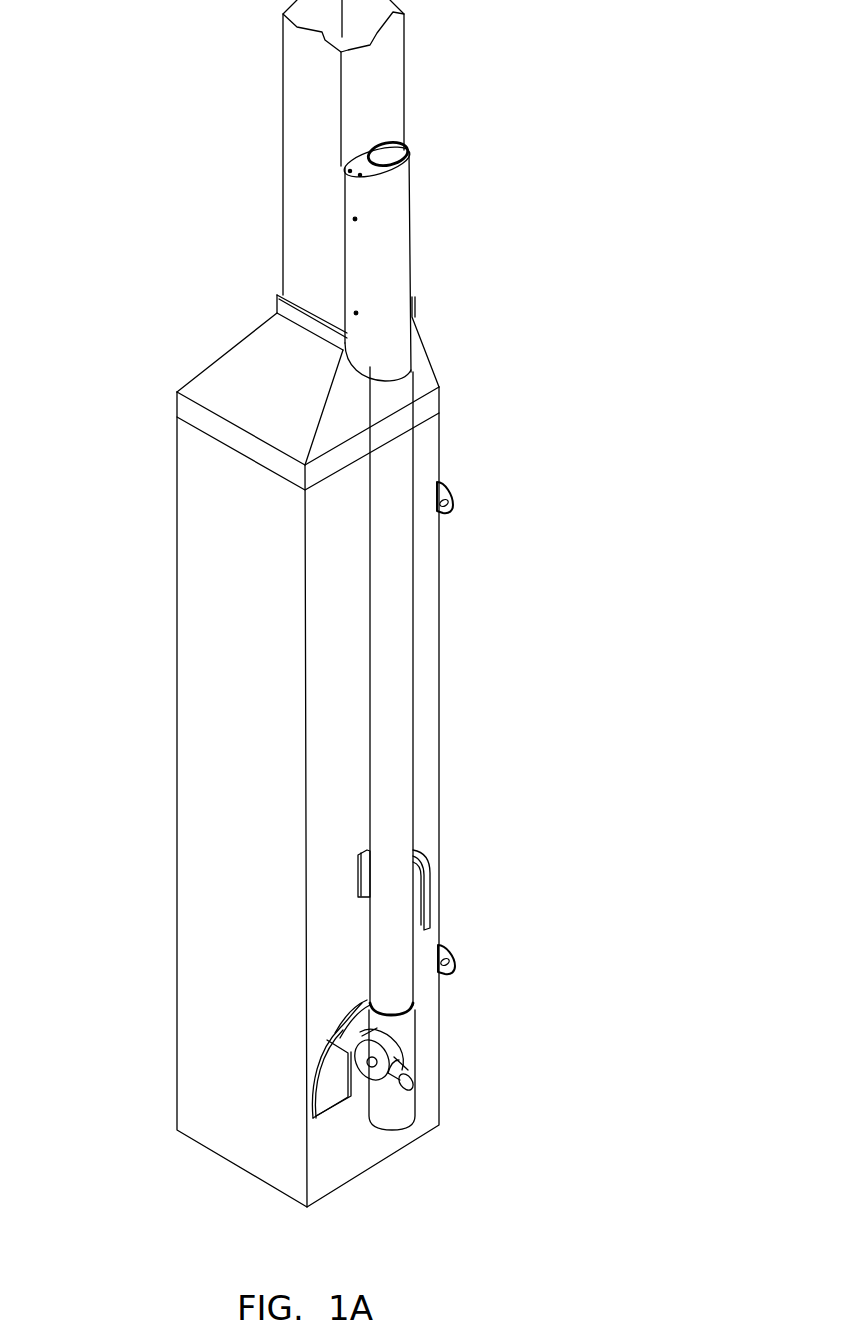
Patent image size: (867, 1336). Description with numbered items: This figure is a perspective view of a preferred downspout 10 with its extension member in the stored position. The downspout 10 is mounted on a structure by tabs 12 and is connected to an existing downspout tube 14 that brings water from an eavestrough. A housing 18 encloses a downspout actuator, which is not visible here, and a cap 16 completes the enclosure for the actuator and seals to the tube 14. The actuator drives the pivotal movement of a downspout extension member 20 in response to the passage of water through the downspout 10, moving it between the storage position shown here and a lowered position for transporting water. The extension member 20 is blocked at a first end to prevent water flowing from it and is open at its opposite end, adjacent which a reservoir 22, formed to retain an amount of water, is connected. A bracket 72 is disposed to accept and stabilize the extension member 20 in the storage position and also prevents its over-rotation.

The downspout 10 is at (166, 593).
The tabs 12 is at (452, 492).
The existing downspout tube 14 is at (300, 192).
The cap 16 is at (262, 348).
The housing 18 is at (430, 779).
The downspout extension member 20 is at (398, 688).
The reservoir 22 is at (400, 213).
The bracket 72 is at (430, 888).